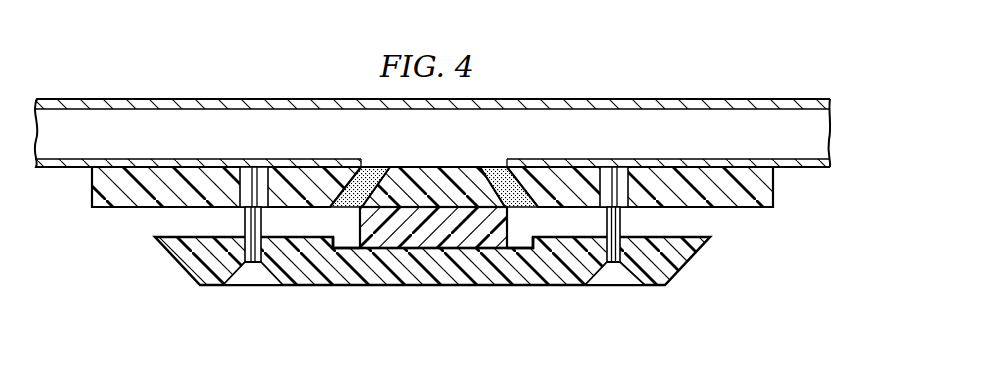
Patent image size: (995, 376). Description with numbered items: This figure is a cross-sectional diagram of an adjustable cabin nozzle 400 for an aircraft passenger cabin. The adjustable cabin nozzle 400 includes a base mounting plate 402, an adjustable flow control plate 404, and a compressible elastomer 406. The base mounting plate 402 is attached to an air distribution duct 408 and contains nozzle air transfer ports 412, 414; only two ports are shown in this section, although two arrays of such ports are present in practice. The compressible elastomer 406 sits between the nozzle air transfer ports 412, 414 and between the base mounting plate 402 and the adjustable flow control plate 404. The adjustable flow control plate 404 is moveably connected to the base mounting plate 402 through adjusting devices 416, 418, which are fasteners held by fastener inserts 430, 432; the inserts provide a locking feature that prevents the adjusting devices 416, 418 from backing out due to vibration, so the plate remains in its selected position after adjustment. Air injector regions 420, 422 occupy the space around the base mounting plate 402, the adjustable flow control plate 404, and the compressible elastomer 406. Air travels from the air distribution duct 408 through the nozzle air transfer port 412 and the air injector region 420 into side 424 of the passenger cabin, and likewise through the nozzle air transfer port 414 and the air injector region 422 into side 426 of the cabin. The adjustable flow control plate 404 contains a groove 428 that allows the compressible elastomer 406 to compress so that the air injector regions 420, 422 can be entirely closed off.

The adjustable cabin nozzle 400 is at (632, 50).
The base mounting plate 402 is at (92, 186).
The adjustable flow control plate 404 is at (527, 286).
The compressible elastomer 406 is at (427, 240).
The air distribution duct 408 is at (299, 99).
The nozzle air transfer port 412 is at (376, 167).
The nozzle air transfer port 414 is at (492, 167).
The adjusting device 416 is at (252, 281).
The adjusting device 418 is at (617, 281).
The air injector region 420 is at (165, 222).
The air injector region 422 is at (694, 222).
The side of the passenger cabin 424 is at (82, 297).
The side of the passenger cabin 426 is at (828, 298).
The groove 428 is at (350, 241).
The fastener insert 430 is at (255, 172).
The fastener insert 432 is at (607, 170).